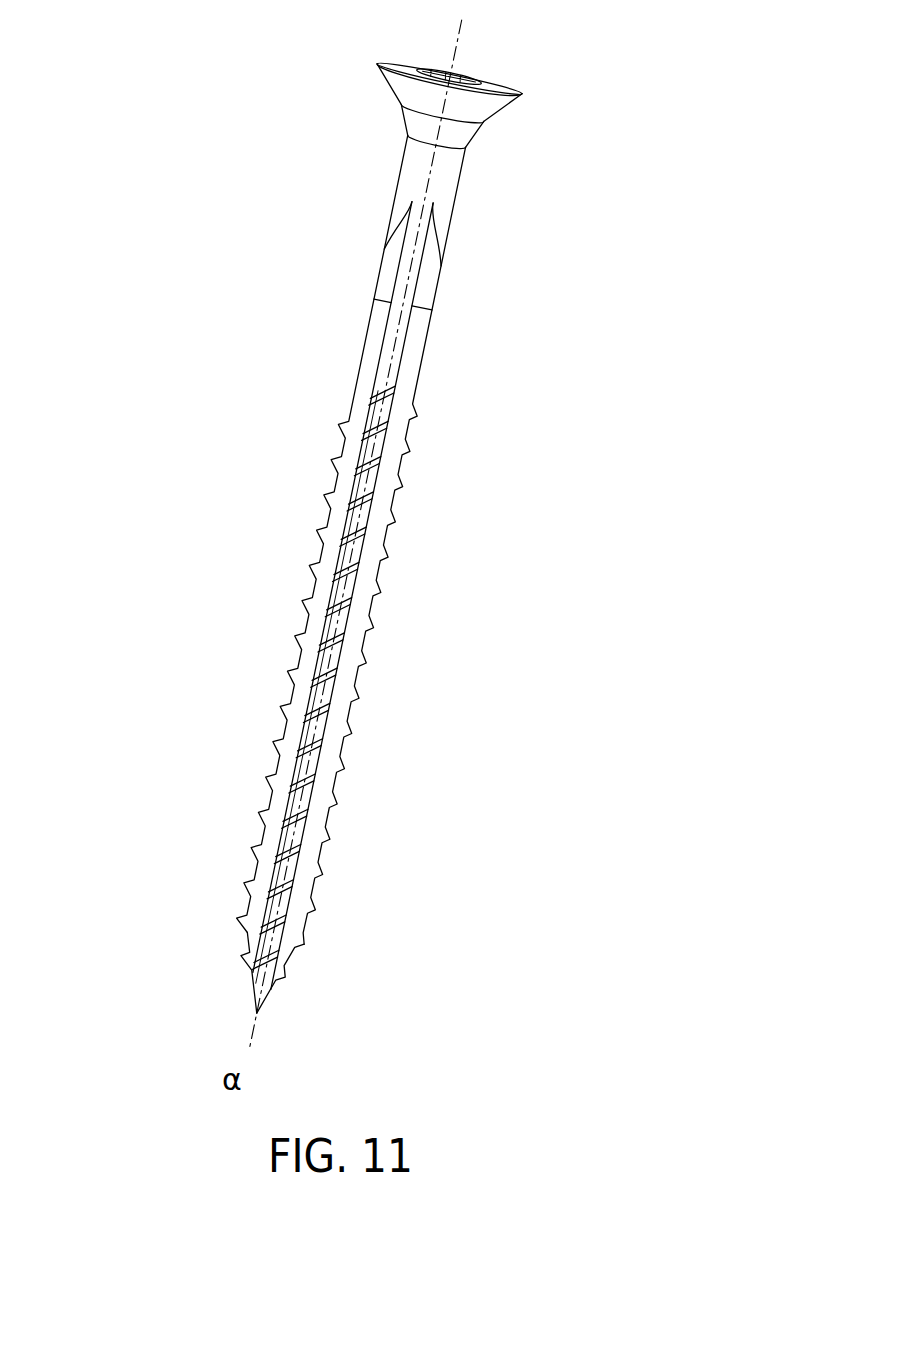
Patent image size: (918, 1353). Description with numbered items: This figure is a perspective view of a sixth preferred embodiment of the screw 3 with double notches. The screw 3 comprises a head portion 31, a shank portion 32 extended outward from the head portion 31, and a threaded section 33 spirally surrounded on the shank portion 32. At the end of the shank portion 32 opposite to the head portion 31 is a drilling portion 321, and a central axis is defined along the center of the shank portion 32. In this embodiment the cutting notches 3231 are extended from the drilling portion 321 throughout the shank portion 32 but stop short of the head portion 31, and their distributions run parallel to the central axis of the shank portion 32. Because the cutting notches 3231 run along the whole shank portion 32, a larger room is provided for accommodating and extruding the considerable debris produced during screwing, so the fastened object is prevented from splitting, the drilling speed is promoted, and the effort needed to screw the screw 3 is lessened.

The screw 3 is at (250, 137).
The head portion 31 is at (480, 107).
The shank portion 32 is at (340, 585).
The threaded section 33 is at (383, 556).
The cutting notches 3231 is at (345, 679).
The drilling portion 321 is at (252, 943).